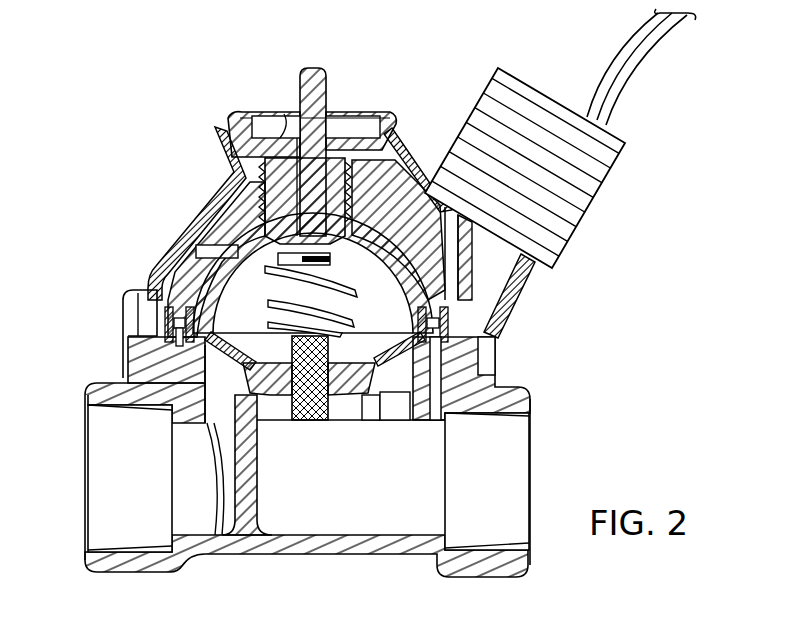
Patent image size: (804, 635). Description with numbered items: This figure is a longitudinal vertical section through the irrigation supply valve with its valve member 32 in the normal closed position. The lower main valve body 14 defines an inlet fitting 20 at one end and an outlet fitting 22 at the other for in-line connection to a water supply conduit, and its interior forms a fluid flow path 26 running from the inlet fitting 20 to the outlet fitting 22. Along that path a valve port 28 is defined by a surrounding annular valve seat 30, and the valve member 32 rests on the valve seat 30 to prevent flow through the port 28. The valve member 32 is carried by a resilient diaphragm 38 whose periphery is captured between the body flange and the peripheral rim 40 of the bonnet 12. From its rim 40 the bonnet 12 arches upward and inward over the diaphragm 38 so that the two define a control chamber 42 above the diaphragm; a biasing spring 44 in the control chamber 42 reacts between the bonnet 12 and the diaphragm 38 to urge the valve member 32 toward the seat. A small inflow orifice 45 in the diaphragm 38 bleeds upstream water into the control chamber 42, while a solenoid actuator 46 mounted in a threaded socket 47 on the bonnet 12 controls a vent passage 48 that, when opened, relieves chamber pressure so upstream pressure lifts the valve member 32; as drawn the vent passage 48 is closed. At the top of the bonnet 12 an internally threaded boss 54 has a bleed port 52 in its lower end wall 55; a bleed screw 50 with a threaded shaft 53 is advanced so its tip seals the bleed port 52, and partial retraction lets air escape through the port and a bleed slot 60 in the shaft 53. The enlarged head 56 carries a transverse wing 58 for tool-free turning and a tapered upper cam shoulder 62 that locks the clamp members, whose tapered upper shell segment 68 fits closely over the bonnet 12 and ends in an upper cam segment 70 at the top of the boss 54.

The bonnet 12 is at (382, 226).
The main valve body 14 is at (300, 550).
The inlet fitting 20 is at (85, 565).
The outlet fitting 22 is at (490, 580).
The fluid flow path 26 is at (178, 520).
The valve port 28 is at (365, 420).
The annular valve seat 30 is at (385, 420).
The valve member 32 is at (315, 420).
The resilient diaphragm 38 is at (398, 345).
The peripheral rim 40 is at (157, 303).
The control chamber 42 is at (373, 290).
The biasing spring 44 is at (270, 325).
The inflow orifice 45 is at (221, 458).
The solenoid actuator 46 is at (577, 218).
The threaded socket 47 is at (528, 292).
The vent passage 48 is at (488, 380).
The bleed screw 50 is at (390, 105).
The bleed port 52 is at (276, 283).
The threaded shaft 53 is at (398, 160).
The threaded boss 54 is at (265, 198).
The lower end wall 55 is at (270, 265).
The enlarged head 56 is at (340, 130).
The transverse tab or wing 58 is at (302, 70).
The bleed slot or aperture 60 is at (283, 130).
The upper cam shoulder 62 is at (402, 135).
The tapered upper shell segment 68 is at (168, 243).
The upper cam segment 70 is at (222, 157).